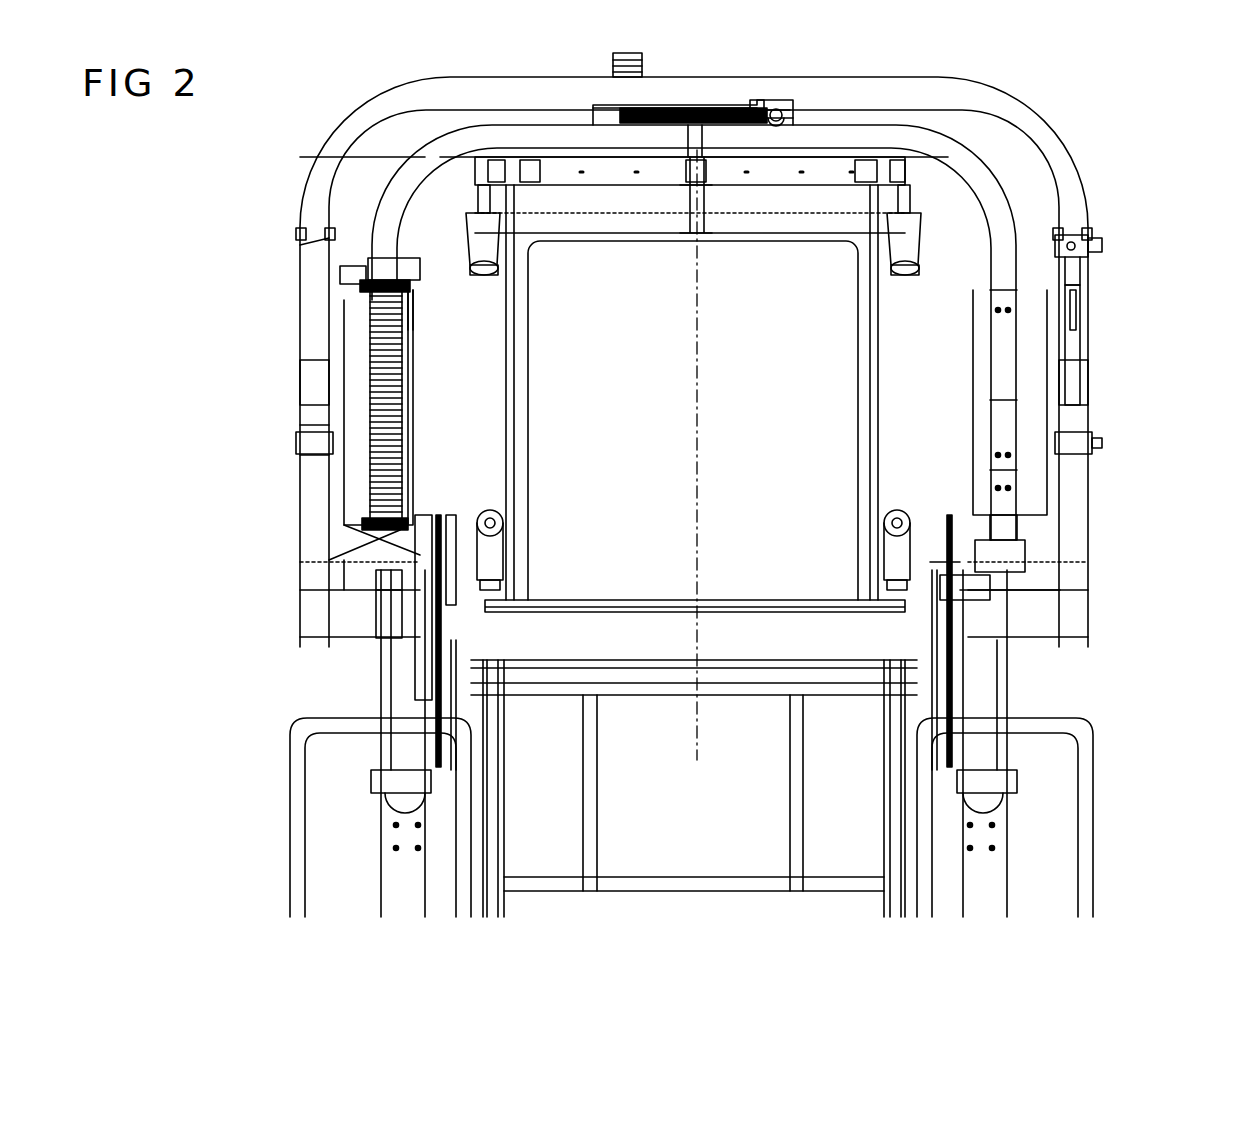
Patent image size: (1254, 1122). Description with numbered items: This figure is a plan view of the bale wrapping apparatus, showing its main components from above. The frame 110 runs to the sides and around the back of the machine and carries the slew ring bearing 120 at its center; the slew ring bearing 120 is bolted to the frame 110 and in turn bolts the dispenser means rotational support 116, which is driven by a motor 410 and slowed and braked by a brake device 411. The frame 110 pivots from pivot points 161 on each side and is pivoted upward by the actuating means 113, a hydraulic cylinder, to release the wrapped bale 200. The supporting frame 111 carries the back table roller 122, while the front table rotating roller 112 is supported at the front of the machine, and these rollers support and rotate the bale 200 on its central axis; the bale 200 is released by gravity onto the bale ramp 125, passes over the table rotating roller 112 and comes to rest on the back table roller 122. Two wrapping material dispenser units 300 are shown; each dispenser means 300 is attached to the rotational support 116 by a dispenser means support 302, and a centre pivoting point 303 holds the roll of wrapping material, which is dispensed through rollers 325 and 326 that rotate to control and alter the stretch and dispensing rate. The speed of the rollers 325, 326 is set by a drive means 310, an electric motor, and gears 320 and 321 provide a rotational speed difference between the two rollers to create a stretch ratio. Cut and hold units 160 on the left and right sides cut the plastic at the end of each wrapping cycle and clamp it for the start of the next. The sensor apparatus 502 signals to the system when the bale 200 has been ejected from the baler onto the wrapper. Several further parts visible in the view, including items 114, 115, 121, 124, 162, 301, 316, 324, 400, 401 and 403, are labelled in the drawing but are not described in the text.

The frame 110 is at (1082, 138).
The supporting frame 111 is at (488, 505).
The table rotating roller 112 is at (878, 510).
The hydraulic cylinder 113 is at (1090, 356).
The mounting block 114 is at (1000, 562).
The frame stringer 115 is at (450, 206).
The dispenser means rotational support 116 is at (300, 158).
The slew ring bearing 120 is at (835, 108).
The inner arch 121 is at (830, 182).
The back table roller 122 is at (848, 215).
The lamp 124 is at (918, 240).
The bale ramp 125 is at (614, 775).
The cut and hold unit 160 is at (420, 548).
The pivot point 161 is at (320, 440).
The clamp 162 is at (962, 584).
The bale 200 is at (830, 392).
The dispenser means 300 is at (330, 362).
The bracket 301 is at (335, 432).
The dispenser means support 302 is at (415, 568).
The centre pivoting point 303 is at (400, 545).
The drive means 310 is at (1098, 273).
The knob 316 is at (420, 262).
The gear 320 is at (392, 272).
The gear 321 is at (418, 284).
The lamp 324 is at (478, 187).
The roller 325 is at (370, 448).
The roller 326 is at (400, 472).
The top rail 400 is at (615, 108).
The rail bar 401 is at (702, 106).
The rail fitting 403 is at (778, 125).
The motor 410 is at (641, 56).
The brake device 411 is at (768, 78).
The fifth sensor component 502 is at (676, 195).